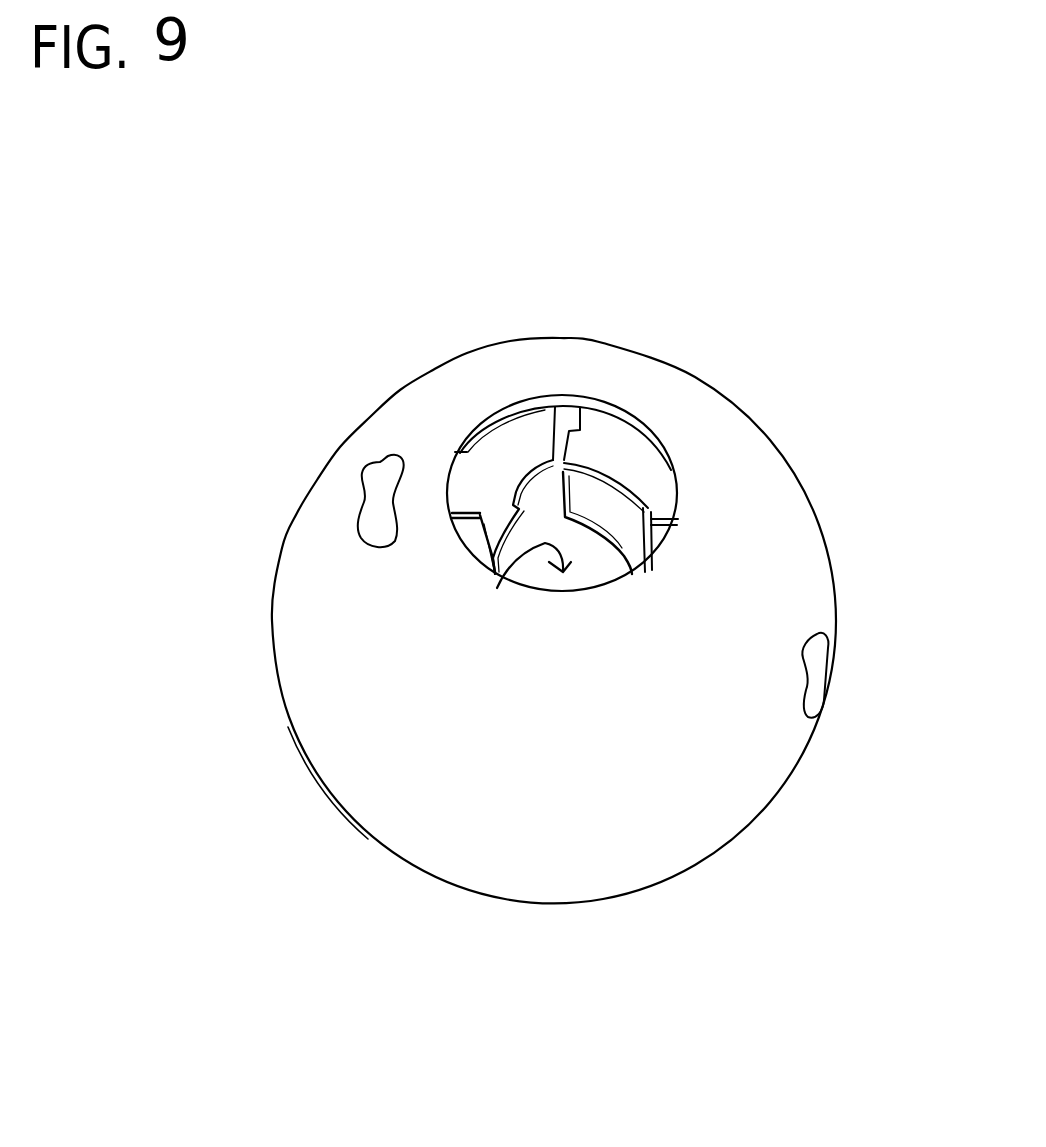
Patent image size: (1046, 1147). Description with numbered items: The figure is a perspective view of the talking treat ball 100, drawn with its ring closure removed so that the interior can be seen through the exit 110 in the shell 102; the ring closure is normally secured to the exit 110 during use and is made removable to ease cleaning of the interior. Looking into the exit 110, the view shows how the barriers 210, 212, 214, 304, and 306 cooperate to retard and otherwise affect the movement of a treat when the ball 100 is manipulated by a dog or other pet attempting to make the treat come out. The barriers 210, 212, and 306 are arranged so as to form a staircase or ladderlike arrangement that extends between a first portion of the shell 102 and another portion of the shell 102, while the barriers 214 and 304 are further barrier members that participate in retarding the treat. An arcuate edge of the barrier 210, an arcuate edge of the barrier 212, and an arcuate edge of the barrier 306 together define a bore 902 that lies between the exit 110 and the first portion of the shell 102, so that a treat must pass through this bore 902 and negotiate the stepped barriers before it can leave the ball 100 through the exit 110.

The ball 100 is at (340, 290).
The shell 102 is at (345, 450).
The exit 110 is at (693, 468).
The barrier 210 is at (624, 455).
The barrier 212 is at (622, 523).
The barrier 214 is at (656, 537).
The barrier 304 is at (475, 535).
The barrier 306 is at (513, 456).
The bore 902 is at (497, 588).